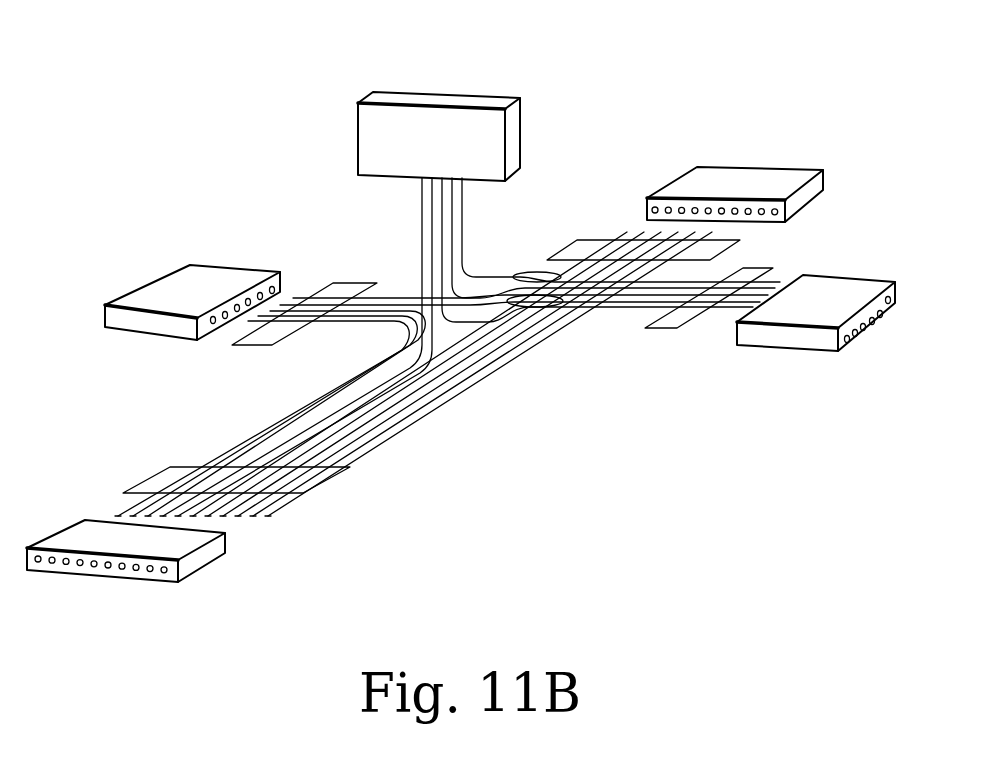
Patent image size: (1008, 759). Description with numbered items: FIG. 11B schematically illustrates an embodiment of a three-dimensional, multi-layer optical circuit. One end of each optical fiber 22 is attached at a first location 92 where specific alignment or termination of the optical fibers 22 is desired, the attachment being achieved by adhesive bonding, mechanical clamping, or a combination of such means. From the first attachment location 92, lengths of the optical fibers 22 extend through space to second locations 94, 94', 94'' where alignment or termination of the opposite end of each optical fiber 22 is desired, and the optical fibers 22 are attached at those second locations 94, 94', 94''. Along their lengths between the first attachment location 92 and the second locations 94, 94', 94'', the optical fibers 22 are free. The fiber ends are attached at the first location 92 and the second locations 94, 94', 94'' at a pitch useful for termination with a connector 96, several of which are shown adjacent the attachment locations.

The optical connector module 96 is at (485, 92).
The fiber support strip 94 is at (267, 332).
The fiber support strip 94' is at (719, 241).
The fiber support strip 94'' is at (709, 339).
The fiber support strip 92 is at (150, 486).
The optical fiber ribbon 22 is at (283, 415).